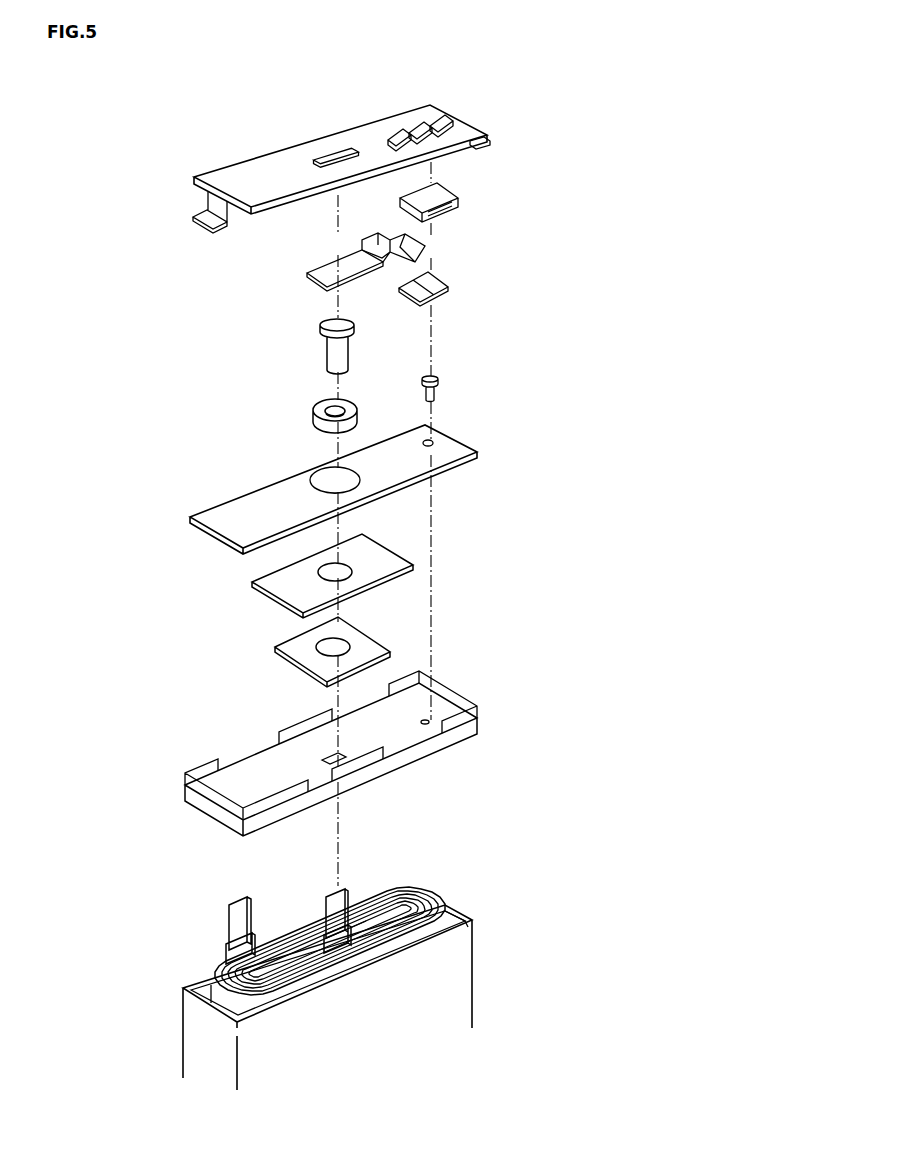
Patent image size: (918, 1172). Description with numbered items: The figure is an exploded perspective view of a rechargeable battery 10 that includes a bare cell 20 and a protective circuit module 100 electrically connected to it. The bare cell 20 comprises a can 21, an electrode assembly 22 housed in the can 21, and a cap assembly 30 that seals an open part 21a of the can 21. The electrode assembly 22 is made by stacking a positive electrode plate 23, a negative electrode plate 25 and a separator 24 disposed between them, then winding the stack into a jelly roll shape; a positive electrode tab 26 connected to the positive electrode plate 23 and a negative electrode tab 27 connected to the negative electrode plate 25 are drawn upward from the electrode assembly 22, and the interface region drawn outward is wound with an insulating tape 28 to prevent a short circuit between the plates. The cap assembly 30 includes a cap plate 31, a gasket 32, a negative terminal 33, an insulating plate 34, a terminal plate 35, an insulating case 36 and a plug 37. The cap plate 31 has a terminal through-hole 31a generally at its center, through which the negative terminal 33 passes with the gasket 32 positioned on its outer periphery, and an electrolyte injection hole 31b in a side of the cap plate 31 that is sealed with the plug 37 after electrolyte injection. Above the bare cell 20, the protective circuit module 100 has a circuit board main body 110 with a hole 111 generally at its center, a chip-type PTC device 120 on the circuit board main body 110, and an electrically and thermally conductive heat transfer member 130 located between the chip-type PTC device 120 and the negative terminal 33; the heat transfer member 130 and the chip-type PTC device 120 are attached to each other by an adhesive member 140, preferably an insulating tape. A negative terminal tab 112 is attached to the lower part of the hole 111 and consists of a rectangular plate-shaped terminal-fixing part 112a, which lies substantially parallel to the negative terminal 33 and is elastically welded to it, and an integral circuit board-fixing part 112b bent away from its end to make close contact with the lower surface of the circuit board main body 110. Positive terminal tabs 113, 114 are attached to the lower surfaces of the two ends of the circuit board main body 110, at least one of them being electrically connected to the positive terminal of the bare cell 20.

The rechargeable battery 10 is at (106, 90).
The protective circuit module 100 is at (200, 158).
The circuit board main body 110 is at (258, 165).
The hole 111 is at (335, 150).
The negative terminal tab 112 is at (243, 236).
The terminal-fixing part 112a is at (327, 268).
The circuit board-fixing part 112b is at (370, 242).
The positive terminal tab 113 is at (213, 205).
The positive terminal tab 114 is at (488, 142).
The chip-type PTC device 120 is at (448, 195).
The heat transfer member 130 is at (400, 243).
The adhesive member 140 is at (435, 292).
The bare cell 20 is at (127, 307).
The can 21 is at (456, 978).
The open part 21a is at (473, 920).
The electrode assembly 22 is at (498, 855).
The positive electrode plate 23 is at (445, 903).
The separator 24 is at (433, 900).
The negative electrode plate 25 is at (424, 900).
The positive electrode tab 26 is at (237, 935).
The negative electrode tab 27 is at (335, 908).
The insulating tape 28 is at (358, 925).
The cap assembly 30 is at (509, 333).
The cap plate 31 is at (230, 507).
The terminal through-hole 31a is at (363, 476).
The electrolyte injection hole 31b is at (432, 440).
The gasket 32 is at (318, 408).
The negative terminal 33 is at (327, 322).
The insulating plate 34 is at (283, 588).
The terminal plate 35 is at (300, 657).
The insulating case 36 is at (185, 752).
The plug 37 is at (432, 375).